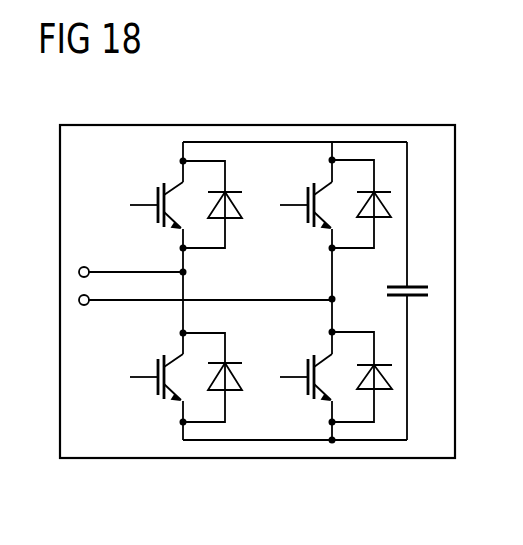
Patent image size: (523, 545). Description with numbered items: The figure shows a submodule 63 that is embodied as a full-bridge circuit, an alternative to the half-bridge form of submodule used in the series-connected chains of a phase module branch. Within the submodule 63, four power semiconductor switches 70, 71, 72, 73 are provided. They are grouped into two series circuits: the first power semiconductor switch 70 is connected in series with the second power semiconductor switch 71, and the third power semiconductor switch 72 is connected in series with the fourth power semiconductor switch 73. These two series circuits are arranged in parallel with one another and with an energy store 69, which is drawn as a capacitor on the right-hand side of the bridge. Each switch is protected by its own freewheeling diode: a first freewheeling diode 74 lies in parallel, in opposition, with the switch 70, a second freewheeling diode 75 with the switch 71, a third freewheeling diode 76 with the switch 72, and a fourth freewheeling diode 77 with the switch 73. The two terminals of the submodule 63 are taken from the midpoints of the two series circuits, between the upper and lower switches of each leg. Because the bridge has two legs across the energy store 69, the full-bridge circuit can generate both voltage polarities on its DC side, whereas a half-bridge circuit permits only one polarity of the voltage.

The submodule 63 is at (197, 125).
The energy store 69 is at (420, 283).
The power semiconductor switch 70 is at (142, 190).
The power semiconductor switch 71 is at (140, 365).
The power semiconductor switch 72 is at (306, 168).
The power semiconductor switch 73 is at (298, 348).
The freewheeling diode 74 is at (238, 192).
The freewheeling diode 75 is at (238, 365).
The freewheeling diode 76 is at (383, 192).
The freewheeling diode 77 is at (392, 383).